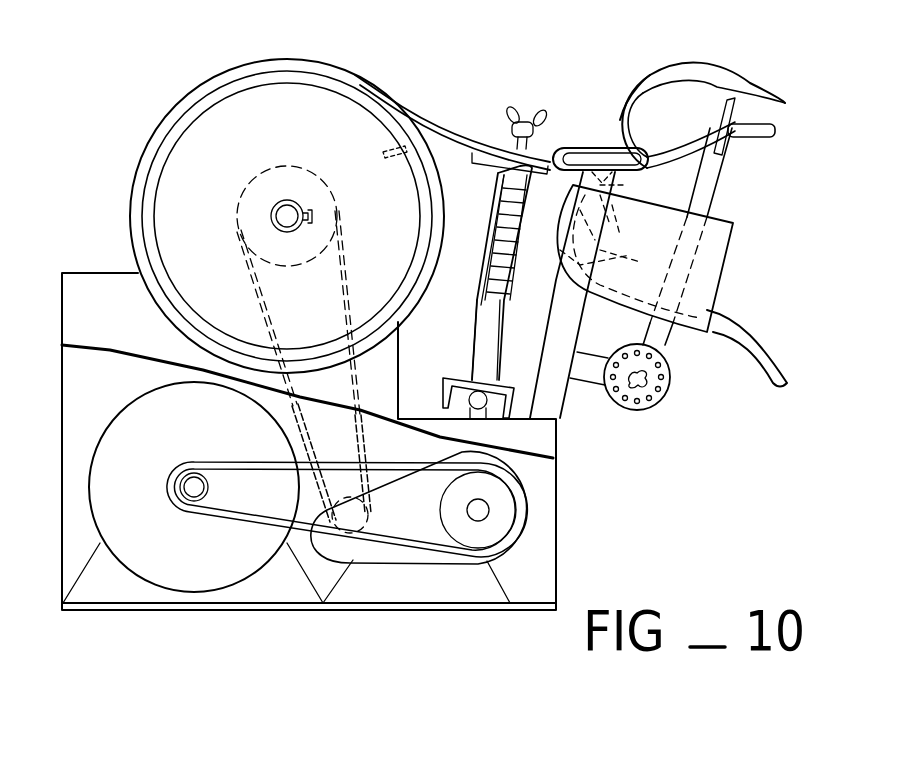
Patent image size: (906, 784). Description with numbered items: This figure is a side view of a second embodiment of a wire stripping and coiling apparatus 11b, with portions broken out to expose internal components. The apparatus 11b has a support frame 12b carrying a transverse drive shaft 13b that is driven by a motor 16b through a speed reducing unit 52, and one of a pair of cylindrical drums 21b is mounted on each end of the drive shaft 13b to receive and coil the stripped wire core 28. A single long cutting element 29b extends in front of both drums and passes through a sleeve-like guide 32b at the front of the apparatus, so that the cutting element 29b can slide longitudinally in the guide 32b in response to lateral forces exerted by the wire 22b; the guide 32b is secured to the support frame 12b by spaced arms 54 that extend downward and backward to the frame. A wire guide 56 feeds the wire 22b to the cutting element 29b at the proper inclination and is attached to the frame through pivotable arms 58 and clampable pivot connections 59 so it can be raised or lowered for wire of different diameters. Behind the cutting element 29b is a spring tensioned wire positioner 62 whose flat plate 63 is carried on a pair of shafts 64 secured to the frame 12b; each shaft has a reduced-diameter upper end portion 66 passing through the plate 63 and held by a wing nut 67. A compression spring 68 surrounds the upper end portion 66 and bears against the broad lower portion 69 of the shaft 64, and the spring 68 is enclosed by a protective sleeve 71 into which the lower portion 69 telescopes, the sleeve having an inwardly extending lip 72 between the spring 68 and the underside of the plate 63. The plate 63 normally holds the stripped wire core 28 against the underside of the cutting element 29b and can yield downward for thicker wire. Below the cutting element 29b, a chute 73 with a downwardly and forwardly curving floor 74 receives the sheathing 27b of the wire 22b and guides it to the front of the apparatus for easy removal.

The wire stripping and coiling apparatus 11b is at (160, 82).
The support frame 12b is at (558, 567).
The transverse drive shaft 13b is at (287, 204).
The motor 16b is at (148, 480).
The cylindrical drum 21b is at (200, 217).
The wire 22b is at (744, 146).
The sheathing 27b is at (613, 185).
The stripped wire core 28 is at (418, 112).
The cutting element 29b is at (583, 146).
The sleeve-like guide 32b is at (640, 118).
The speed reducing unit 52 is at (537, 507).
The arm 54 is at (563, 335).
The wire guide 56 is at (705, 95).
The pivotable arm 58 is at (715, 193).
The clampable pivot connection 59 is at (658, 388).
The spring tensioned wire positioner 62 is at (497, 97).
The flat plate 63 is at (509, 224).
The shaft 64 is at (468, 358).
The upper end portion 66 is at (507, 267).
The wing nut 67 is at (537, 110).
The compression spring 68 is at (512, 237).
The lower portion of shaft 69 is at (485, 372).
The protective sleeve 71 is at (493, 225).
The inwardly extending lip 72 is at (507, 173).
The chute 73 is at (578, 280).
The floor 74 is at (600, 248).